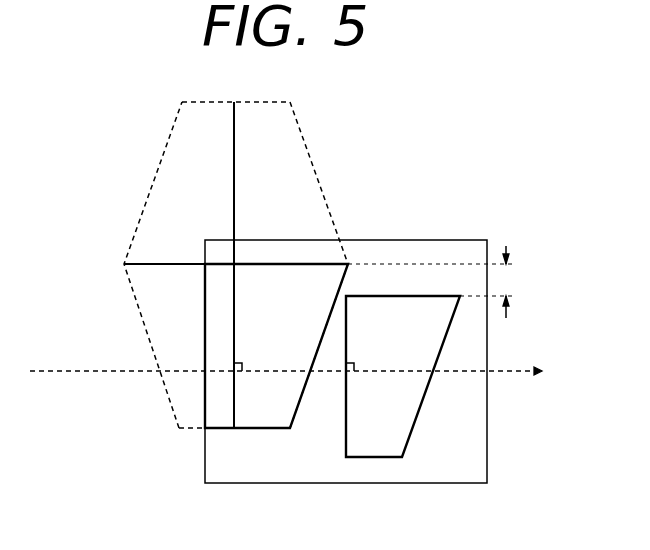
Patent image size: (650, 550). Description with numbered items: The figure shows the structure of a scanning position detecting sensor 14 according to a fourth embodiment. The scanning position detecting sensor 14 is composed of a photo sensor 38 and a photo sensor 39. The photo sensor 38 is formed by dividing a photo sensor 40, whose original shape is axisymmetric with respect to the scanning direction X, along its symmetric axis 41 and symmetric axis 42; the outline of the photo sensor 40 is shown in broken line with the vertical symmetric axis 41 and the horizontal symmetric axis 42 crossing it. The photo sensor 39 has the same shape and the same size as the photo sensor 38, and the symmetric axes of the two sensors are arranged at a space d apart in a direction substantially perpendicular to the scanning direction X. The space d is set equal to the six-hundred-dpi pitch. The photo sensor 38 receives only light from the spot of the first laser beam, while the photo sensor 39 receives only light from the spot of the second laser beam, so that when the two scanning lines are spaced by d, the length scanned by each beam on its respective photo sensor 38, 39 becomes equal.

The scanning position detecting sensor 14 is at (420, 240).
The photo sensor 38 is at (255, 430).
The photo sensor 39 is at (367, 458).
The photo sensor 40 is at (314, 165).
The symmetric axis 41 is at (235, 207).
The symmetric axis 42 is at (167, 264).
The scanning direction X is at (54, 370).
The space d is at (437, 282).